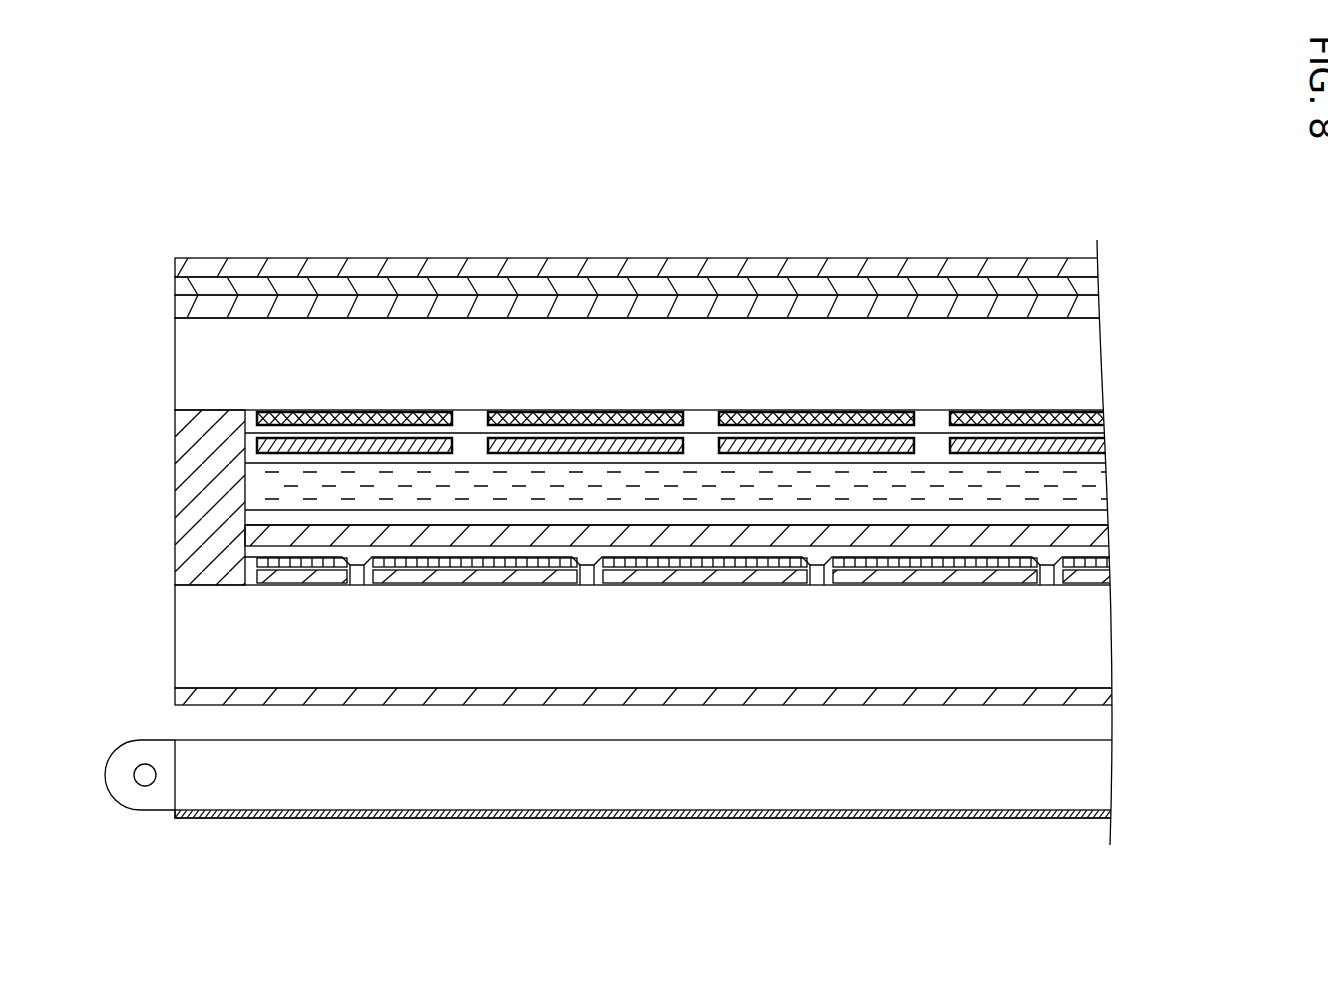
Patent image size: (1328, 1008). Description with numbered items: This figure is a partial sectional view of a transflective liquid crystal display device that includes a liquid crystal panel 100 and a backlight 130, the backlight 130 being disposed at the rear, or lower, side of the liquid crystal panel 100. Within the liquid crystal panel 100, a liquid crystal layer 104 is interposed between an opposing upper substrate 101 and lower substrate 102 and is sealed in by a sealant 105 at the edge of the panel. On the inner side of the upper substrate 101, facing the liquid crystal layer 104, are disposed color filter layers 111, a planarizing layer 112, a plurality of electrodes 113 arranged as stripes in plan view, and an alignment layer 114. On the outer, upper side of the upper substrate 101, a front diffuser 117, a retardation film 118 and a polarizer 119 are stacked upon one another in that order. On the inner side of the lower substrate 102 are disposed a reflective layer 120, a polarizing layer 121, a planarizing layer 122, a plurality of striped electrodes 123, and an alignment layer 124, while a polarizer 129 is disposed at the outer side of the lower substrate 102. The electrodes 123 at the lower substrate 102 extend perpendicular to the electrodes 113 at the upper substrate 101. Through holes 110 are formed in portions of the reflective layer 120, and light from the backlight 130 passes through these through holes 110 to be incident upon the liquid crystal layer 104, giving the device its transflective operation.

The liquid crystal panel 100 is at (1060, 256).
The upper substrate 101 is at (1093, 360).
The lower substrate 102 is at (1098, 640).
The liquid crystal layer 104 is at (1103, 482).
The sealant 105 is at (208, 428).
The through holes 110 is at (362, 585).
The color filter layers 111 is at (301, 420).
The planarizing layer 112 is at (1105, 420).
The electrodes 113 is at (384, 450).
The alignment layer 114 is at (1105, 447).
The front diffuser 117 is at (1105, 307).
The retardation film 118 is at (1105, 287).
The polarizer 119 is at (1105, 268).
The reflective layer 120 is at (275, 585).
The polarizing layer 121 is at (1110, 566).
The planarizing layer 122 is at (1108, 554).
The electrodes 123 is at (1103, 537).
The alignment layer 124 is at (1103, 517).
The polarizer 129 is at (1098, 697).
The backlight 130 is at (1098, 785).